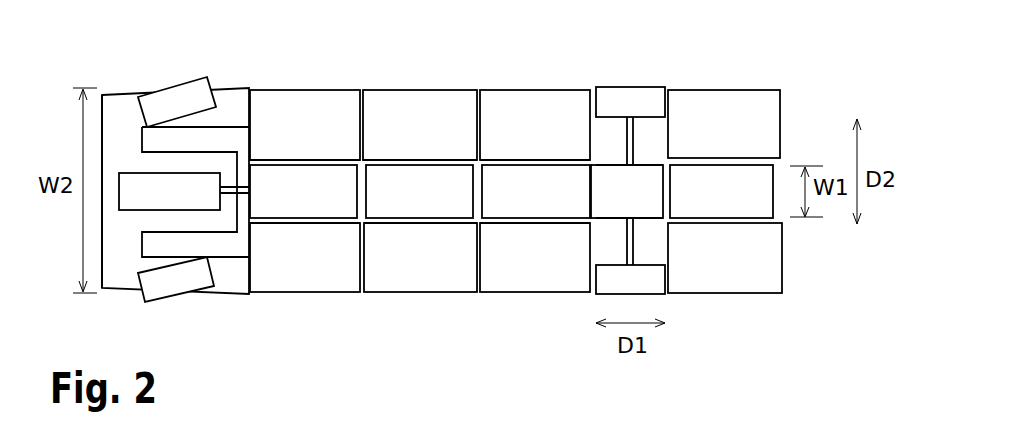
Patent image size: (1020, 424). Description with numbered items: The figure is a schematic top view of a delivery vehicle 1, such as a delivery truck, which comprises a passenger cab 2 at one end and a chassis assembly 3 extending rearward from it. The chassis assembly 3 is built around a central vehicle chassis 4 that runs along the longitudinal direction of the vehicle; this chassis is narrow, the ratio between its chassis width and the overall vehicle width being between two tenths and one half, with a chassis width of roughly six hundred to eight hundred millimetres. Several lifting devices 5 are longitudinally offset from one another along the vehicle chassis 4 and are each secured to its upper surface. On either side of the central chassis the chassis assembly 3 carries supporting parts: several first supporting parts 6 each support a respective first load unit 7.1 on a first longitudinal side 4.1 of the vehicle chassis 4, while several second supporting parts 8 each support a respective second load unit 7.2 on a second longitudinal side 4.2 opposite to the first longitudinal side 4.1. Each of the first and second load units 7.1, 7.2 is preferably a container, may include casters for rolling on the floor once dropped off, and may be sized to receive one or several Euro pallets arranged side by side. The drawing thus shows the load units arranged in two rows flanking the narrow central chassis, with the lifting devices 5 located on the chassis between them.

The delivery vehicle 1 is at (141, 321).
The passenger cab 2 is at (126, 117).
The chassis assembly 3 is at (612, 172).
The vehicle chassis 4 is at (642, 170).
The first longitudinal side 4.1 is at (600, 158).
The second longitudinal side 4.2 is at (608, 222).
The lifting device 5 is at (315, 188).
The first supporting part 6 is at (342, 160).
The first load unit 7.1 is at (276, 115).
The second load unit 7.2 is at (322, 268).
The second supporting part 8 is at (308, 222).